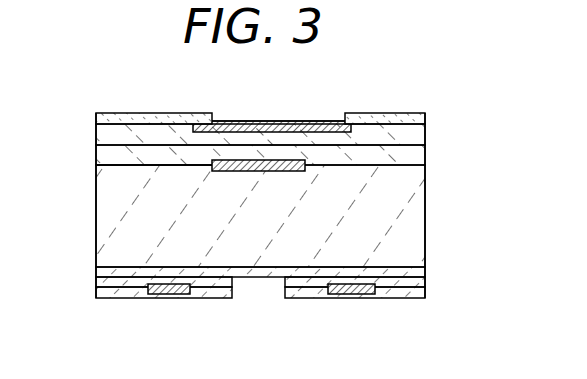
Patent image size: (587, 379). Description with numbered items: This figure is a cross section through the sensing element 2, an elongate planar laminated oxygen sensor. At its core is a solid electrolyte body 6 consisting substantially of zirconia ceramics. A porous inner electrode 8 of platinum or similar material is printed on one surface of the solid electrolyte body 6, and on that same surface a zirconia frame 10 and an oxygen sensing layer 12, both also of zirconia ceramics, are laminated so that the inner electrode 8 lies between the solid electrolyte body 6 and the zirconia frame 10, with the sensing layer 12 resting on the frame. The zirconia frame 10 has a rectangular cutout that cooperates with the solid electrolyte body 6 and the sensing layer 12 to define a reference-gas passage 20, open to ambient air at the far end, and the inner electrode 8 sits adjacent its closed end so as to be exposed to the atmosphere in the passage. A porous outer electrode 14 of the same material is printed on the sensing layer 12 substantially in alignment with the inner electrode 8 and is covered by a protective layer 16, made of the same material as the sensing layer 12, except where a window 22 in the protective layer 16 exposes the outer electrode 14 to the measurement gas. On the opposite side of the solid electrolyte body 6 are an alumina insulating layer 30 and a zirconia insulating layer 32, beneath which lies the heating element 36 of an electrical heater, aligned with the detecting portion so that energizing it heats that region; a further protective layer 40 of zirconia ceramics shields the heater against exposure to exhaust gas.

The sensing element 2 is at (95, 98).
The solid electrolyte body 6 is at (423, 225).
The inner electrode 8 is at (214, 171).
The zirconia frame 10 is at (415, 155).
The oxygen sensing layer 12 is at (415, 135).
The outer electrode 14 is at (325, 120).
The protective layer 16 is at (423, 118).
The reference-gas passage 20 is at (266, 153).
The window 22 is at (235, 116).
The alumina insulating layer 30 is at (417, 272).
The zirconia insulating layer 32 is at (415, 283).
The heating element 36 is at (172, 297).
The protective layer 40 is at (395, 298).